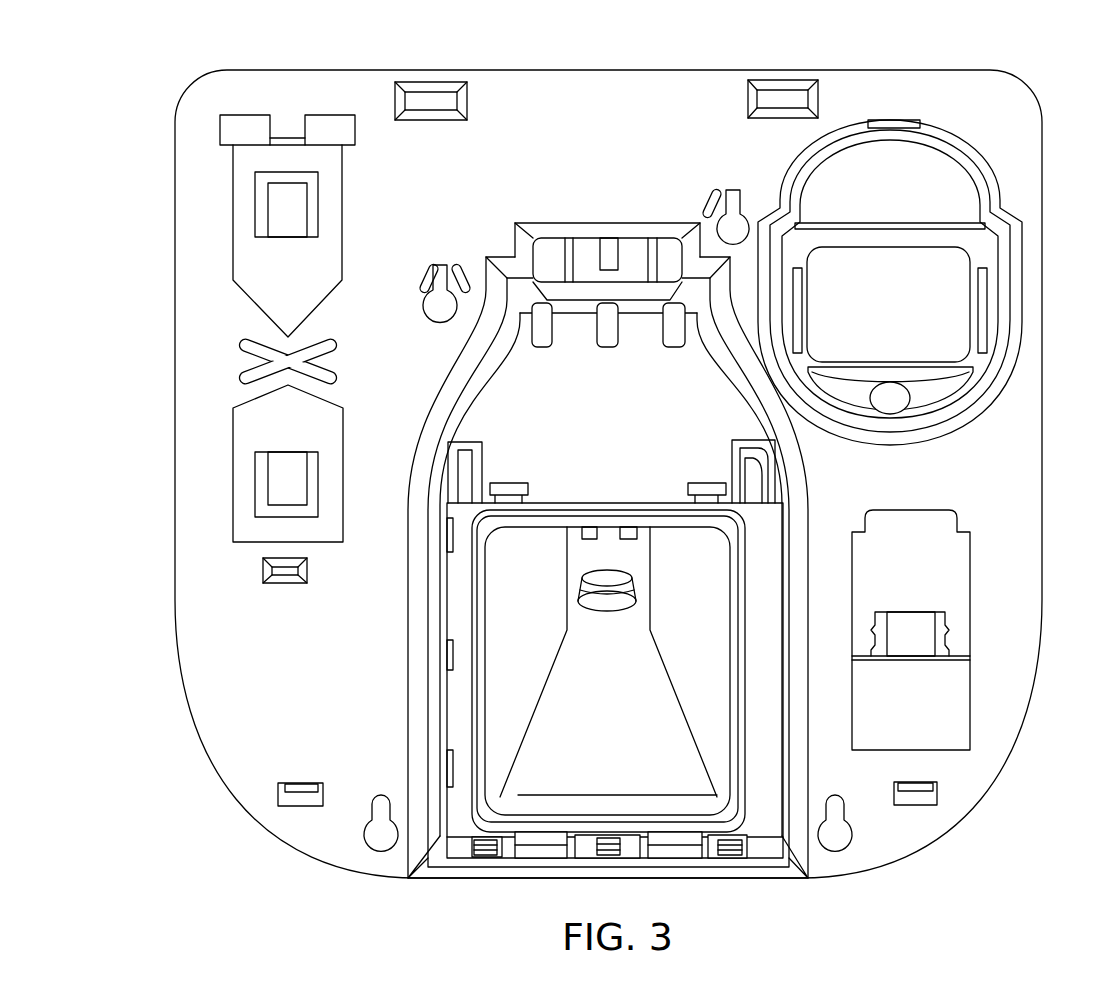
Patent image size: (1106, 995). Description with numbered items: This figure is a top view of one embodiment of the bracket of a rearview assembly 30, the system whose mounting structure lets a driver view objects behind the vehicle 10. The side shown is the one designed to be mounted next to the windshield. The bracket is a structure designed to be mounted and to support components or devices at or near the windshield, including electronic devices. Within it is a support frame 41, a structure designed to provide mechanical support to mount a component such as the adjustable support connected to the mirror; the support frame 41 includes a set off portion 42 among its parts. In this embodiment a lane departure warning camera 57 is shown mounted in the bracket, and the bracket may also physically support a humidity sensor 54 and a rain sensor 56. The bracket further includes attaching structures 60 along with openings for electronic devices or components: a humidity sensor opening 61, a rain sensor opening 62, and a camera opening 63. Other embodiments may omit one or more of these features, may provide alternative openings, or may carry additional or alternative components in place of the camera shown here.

The rearview assembly 30 is at (127, 118).
The vehicle 10 is at (175, 467).
The support frame 41 is at (412, 643).
The set off portion 42 is at (625, 441).
The lane departure warning camera 57 is at (615, 630).
The rain sensor 56 is at (938, 178).
The rain sensor opening 62 is at (1007, 303).
The humidity sensor opening 61 is at (957, 577).
The humidity sensor 54 is at (960, 703).
The attaching structures 60 is at (442, 264).
The camera opening 63 is at (778, 855).